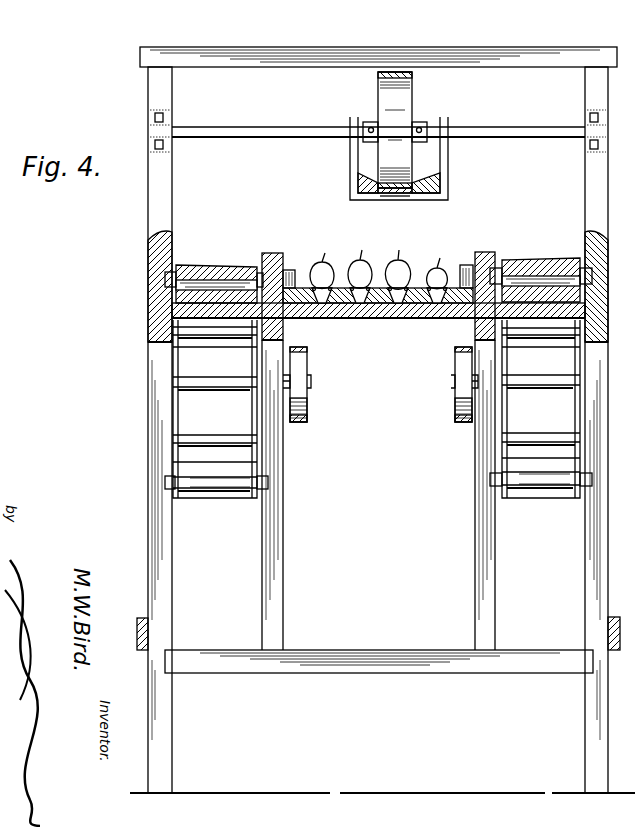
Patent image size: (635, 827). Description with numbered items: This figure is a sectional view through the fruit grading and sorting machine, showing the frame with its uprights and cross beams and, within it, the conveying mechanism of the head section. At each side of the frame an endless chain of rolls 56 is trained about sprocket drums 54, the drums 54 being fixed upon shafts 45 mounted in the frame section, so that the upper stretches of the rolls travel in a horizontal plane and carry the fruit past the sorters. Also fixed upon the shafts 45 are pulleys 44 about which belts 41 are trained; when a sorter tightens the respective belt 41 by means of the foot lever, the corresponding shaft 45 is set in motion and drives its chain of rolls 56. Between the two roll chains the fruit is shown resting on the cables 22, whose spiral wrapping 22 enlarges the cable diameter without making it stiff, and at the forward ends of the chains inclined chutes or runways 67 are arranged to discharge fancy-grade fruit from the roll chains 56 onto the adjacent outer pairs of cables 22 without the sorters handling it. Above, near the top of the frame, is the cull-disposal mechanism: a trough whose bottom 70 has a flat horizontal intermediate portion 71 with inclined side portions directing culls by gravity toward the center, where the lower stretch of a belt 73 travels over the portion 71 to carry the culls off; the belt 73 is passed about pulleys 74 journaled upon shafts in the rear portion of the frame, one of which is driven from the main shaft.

The spiral wrapping 22 is at (413, 278).
The belts 41 is at (297, 350).
The pulleys 44 is at (307, 405).
The shafts 45 is at (455, 380).
The sprocket drums 54 is at (222, 427).
The endless chain of rolls 56 is at (230, 260).
The inclined chutes or runways 67 is at (186, 258).
The bottom 70 is at (441, 195).
The horizontal intermediate portion 71 is at (395, 190).
The belt 73 is at (380, 73).
The pulleys 74 is at (397, 107).